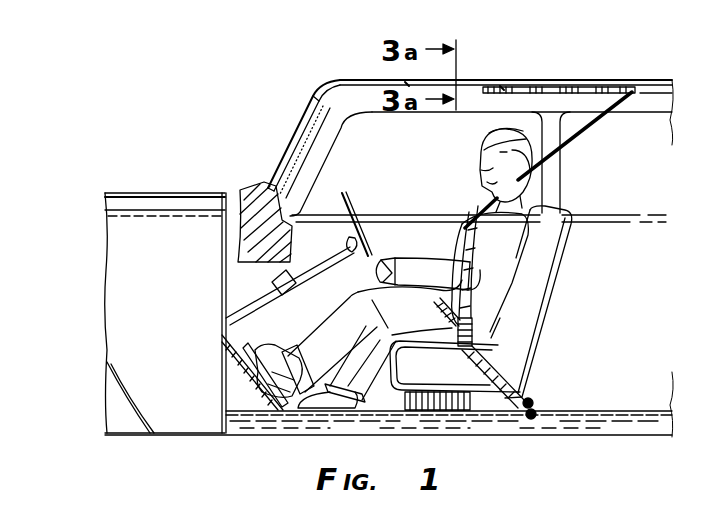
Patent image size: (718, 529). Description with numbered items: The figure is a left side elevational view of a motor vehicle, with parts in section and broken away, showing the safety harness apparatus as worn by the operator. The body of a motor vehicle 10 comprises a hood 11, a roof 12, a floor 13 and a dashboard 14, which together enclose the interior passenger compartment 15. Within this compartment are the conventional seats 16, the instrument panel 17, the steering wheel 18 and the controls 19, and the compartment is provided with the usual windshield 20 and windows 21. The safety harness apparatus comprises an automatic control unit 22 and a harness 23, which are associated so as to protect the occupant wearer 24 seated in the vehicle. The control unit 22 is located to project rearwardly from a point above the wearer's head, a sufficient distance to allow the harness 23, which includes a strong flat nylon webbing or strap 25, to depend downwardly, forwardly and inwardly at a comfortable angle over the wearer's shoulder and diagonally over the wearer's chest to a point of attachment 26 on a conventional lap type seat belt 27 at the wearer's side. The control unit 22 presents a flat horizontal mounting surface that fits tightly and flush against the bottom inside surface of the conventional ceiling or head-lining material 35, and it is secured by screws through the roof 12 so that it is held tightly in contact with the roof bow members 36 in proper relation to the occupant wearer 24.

The body of a motor vehicle 10 is at (138, 265).
The hood 11 is at (158, 205).
The roof 12 is at (585, 80).
The floor 13 is at (612, 410).
The dashboard 14 is at (222, 325).
The interior passenger compartment 15 is at (608, 273).
The seats 16 is at (470, 400).
The instrument panel 17 is at (283, 228).
The steering wheel 18 is at (352, 202).
The controls 19 is at (245, 380).
The windshield 20 is at (290, 140).
The windows 21 is at (448, 163).
The automatic control unit 22 is at (520, 90).
The harness 23 is at (582, 133).
The occupant wearer 24 is at (535, 212).
The strap 25 is at (455, 255).
The point of attachment 26 is at (476, 322).
The lap type seat belt 27 is at (452, 322).
The ceiling or head-lining material 35 is at (660, 90).
The roof bow members 36 is at (405, 82).